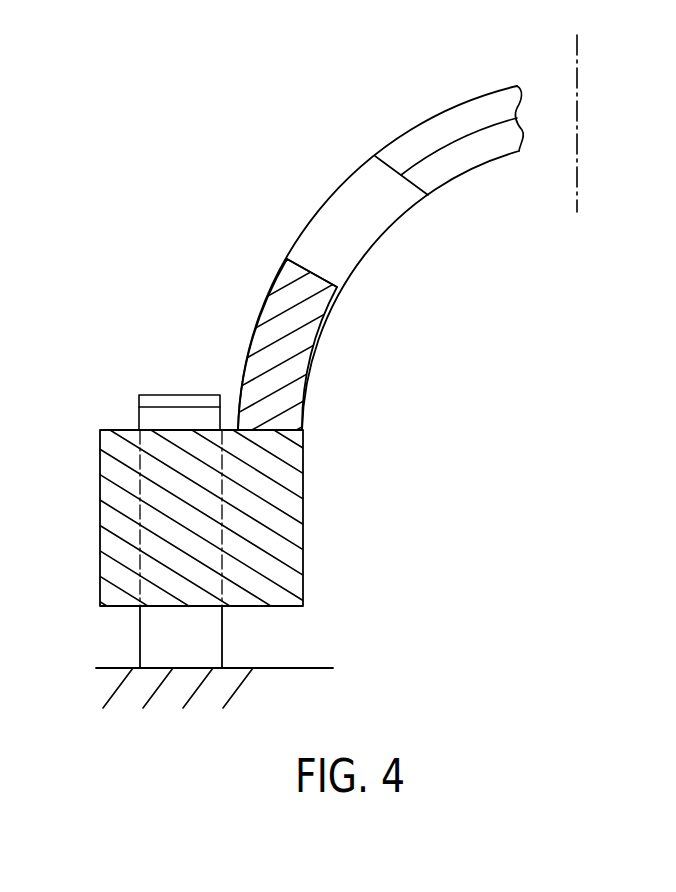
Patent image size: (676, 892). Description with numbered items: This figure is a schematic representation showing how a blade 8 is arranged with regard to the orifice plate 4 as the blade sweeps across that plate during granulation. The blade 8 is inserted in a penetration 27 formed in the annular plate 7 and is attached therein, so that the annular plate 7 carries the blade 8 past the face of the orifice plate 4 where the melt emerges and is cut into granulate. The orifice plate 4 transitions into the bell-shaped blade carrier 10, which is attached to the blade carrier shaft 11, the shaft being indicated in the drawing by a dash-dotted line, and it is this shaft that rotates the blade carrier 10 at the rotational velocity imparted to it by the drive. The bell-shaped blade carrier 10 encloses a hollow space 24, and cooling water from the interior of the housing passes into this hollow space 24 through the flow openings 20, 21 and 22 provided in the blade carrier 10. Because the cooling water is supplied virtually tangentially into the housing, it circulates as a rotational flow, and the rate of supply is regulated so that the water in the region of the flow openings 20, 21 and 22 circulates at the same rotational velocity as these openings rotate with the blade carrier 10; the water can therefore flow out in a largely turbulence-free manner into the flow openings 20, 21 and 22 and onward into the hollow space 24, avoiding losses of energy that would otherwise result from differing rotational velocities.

The orifice plate 4 is at (130, 697).
The annular plate 7 is at (120, 455).
The blade 8 is at (160, 415).
The bell-shaped blade carrier 10 is at (307, 333).
The blade carrier shaft 11 is at (577, 55).
The flow opening 20 is at (373, 279).
The flow opening 21 is at (373, 279).
The flow opening 22 is at (373, 279).
The hollow space 24 is at (373, 279).
The penetration 27 is at (155, 543).